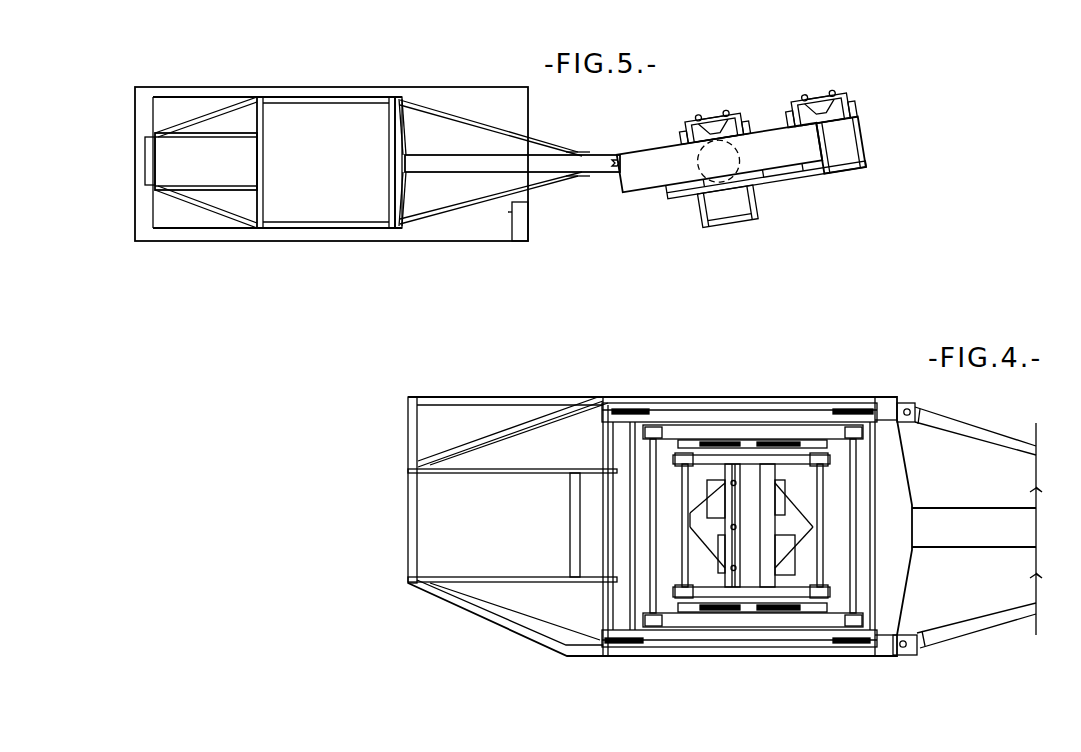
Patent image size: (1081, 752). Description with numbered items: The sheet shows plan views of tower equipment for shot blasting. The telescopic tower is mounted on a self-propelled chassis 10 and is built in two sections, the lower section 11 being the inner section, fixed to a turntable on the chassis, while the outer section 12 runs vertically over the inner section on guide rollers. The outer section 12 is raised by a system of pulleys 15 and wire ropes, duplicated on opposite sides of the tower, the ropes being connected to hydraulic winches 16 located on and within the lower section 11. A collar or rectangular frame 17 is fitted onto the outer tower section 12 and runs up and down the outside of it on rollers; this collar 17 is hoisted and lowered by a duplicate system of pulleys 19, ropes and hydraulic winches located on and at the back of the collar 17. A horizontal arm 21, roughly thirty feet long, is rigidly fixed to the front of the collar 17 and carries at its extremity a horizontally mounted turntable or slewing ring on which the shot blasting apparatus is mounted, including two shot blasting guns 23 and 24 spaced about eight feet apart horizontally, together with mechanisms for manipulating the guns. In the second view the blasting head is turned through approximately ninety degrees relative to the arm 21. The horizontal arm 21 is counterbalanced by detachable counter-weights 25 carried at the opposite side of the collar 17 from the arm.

In FIG. 5, the self-propelled chassis 10 is at (203, 236).
In FIG. 4, the lower tower section 11 is at (790, 597).
In FIG. 4, the outer tower section 12 is at (742, 431).
In FIG. 4, the pulleys 15 is at (727, 605).
In FIG. 4, the hydraulic winches 16 is at (782, 512).
In FIG. 5, the collar 17 is at (272, 97).
In FIG. 4, the collar 17 is at (797, 398).
In FIG. 4, the pulleys 19 is at (852, 410).
In FIG. 5, the horizontal arm 21 is at (603, 162).
In FIG. 4, the horizontal arm 21 is at (1018, 532).
In FIG. 5, the shot blasting gun 23 is at (710, 118).
In FIG. 5, the shot blasting gun 24 is at (812, 96).
In FIG. 5, the counter-weights 25 is at (194, 174).
In FIG. 4, the counter-weights 25 is at (490, 517).